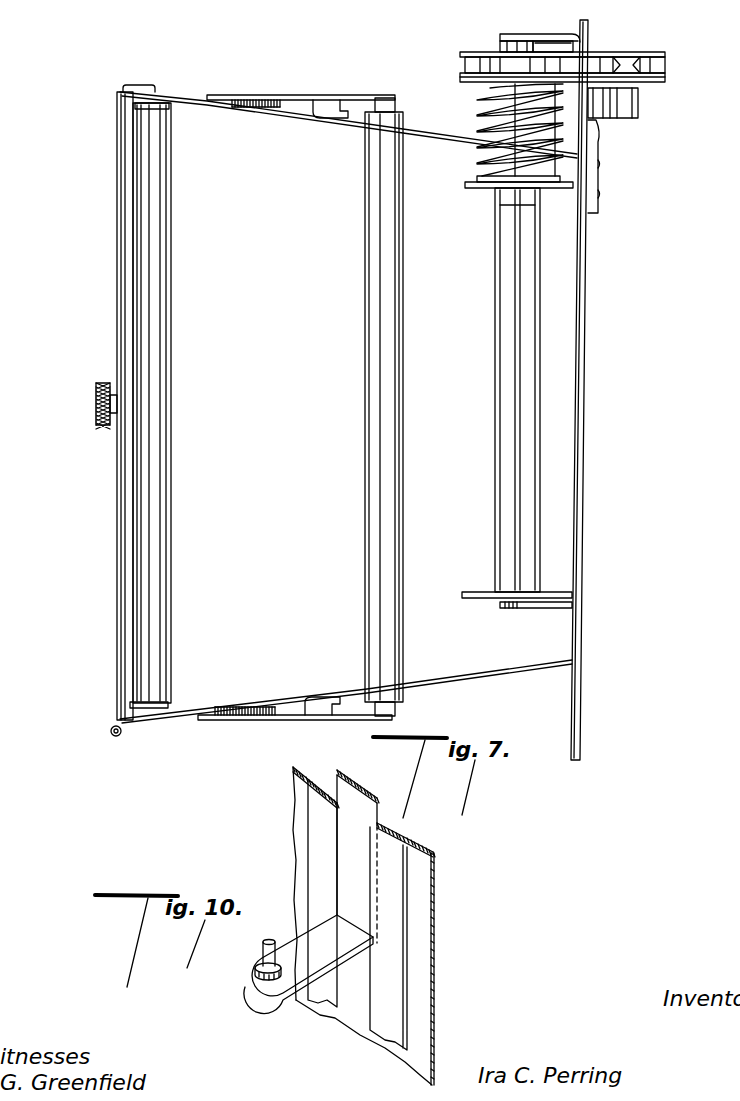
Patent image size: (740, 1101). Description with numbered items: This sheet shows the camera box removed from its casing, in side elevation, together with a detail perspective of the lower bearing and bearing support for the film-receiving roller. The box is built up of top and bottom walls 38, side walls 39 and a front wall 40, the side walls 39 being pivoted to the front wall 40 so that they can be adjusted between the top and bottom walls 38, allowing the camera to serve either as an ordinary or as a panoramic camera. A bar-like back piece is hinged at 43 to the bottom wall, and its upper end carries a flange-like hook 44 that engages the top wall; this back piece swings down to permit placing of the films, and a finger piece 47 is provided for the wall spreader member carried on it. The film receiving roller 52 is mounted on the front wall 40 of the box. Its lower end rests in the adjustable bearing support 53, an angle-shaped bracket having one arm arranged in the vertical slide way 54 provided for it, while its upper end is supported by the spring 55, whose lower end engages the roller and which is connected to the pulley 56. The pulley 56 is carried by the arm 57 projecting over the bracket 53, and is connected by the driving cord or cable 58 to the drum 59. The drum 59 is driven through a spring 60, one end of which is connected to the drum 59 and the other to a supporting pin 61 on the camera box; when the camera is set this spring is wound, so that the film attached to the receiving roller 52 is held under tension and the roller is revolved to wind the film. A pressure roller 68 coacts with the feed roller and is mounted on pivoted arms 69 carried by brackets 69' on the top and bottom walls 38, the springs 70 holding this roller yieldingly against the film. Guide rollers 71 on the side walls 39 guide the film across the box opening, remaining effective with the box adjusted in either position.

In FIG. 7, the top and bottom walls 38 is at (182, 93).
In FIG. 7, the side walls 39 is at (215, 487).
In FIG. 7, the front wall 40 is at (590, 315).
In FIG. 10, the front wall 40 is at (433, 882).
In FIG. 7, the hinge 43 is at (115, 737).
In FIG. 7, the flange-like hook 44 is at (138, 87).
In FIG. 7, the finger piece 47 is at (96, 392).
In FIG. 7, the film receiving roller 52 is at (510, 321).
In FIG. 7, the adjustable bearing support 53 is at (575, 608).
In FIG. 10, the adjustable bearing support 53 is at (312, 963).
In FIG. 10, the vertical slide way 54 is at (367, 963).
In FIG. 7, the spring 55 is at (547, 160).
In FIG. 7, the pulley 56 is at (478, 70).
In FIG. 7, the arm 57 is at (543, 34).
In FIG. 7, the driving cord or cable 58 is at (462, 52).
In FIG. 7, the drum 59 is at (616, 66).
In FIG. 7, the spring 60 is at (640, 114).
In FIG. 7, the supporting pin 61 is at (601, 131).
In FIG. 7, the pressure roller 68 is at (380, 192).
In FIG. 7, the pivoted arms 69 is at (296, 404).
In FIG. 7, the brackets 69' is at (330, 383).
In FIG. 7, the springs 70 is at (253, 98).
In FIG. 7, the guide rollers 71 is at (150, 165).